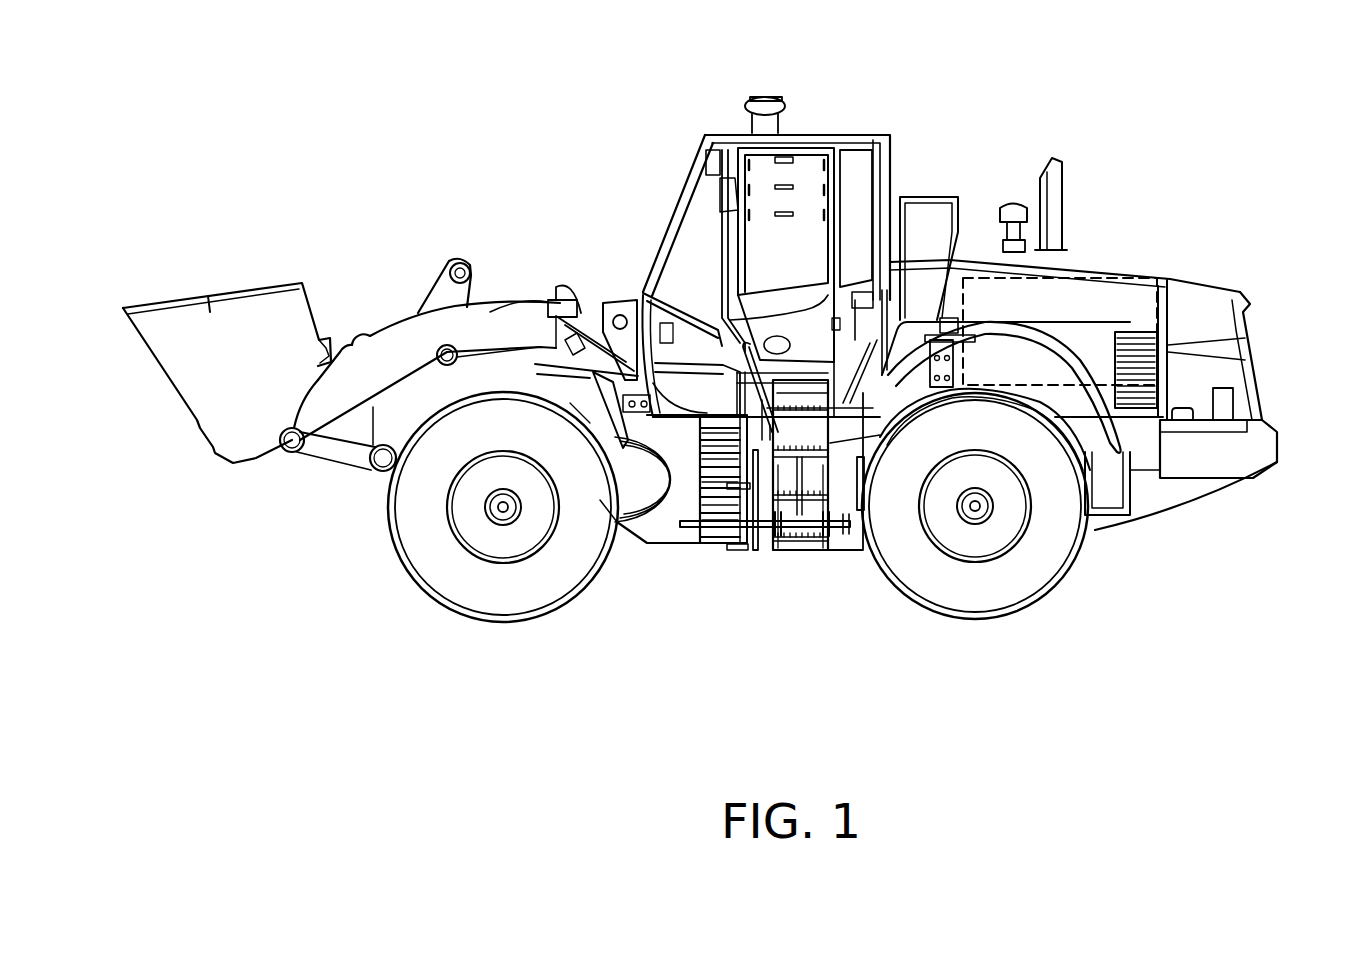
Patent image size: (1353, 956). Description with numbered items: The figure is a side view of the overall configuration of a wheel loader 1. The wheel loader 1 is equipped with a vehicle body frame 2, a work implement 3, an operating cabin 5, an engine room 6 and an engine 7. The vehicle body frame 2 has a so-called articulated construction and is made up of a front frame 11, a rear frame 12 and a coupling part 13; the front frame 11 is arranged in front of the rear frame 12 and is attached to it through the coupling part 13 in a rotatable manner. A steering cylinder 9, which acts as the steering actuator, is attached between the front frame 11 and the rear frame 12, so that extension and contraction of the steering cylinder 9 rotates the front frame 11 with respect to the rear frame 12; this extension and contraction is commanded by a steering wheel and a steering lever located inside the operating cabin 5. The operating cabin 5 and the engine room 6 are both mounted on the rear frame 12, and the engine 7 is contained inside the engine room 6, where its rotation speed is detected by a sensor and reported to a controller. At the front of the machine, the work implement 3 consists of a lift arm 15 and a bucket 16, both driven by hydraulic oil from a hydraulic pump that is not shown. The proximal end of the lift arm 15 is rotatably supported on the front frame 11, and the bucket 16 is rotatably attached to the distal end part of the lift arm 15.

The wheel loader 1 is at (486, 176).
The vehicle body frame 2 is at (803, 652).
The work implement 3 is at (305, 226).
The operating cabin 5 is at (850, 131).
The engine room 6 is at (1133, 268).
The engine 7 is at (1082, 278).
The steering cylinder 9 is at (694, 498).
The front frame 11 is at (676, 546).
The rear frame 12 is at (797, 550).
The coupling part 13 is at (741, 548).
The lift arm 15 is at (397, 333).
The bucket 16 is at (293, 318).